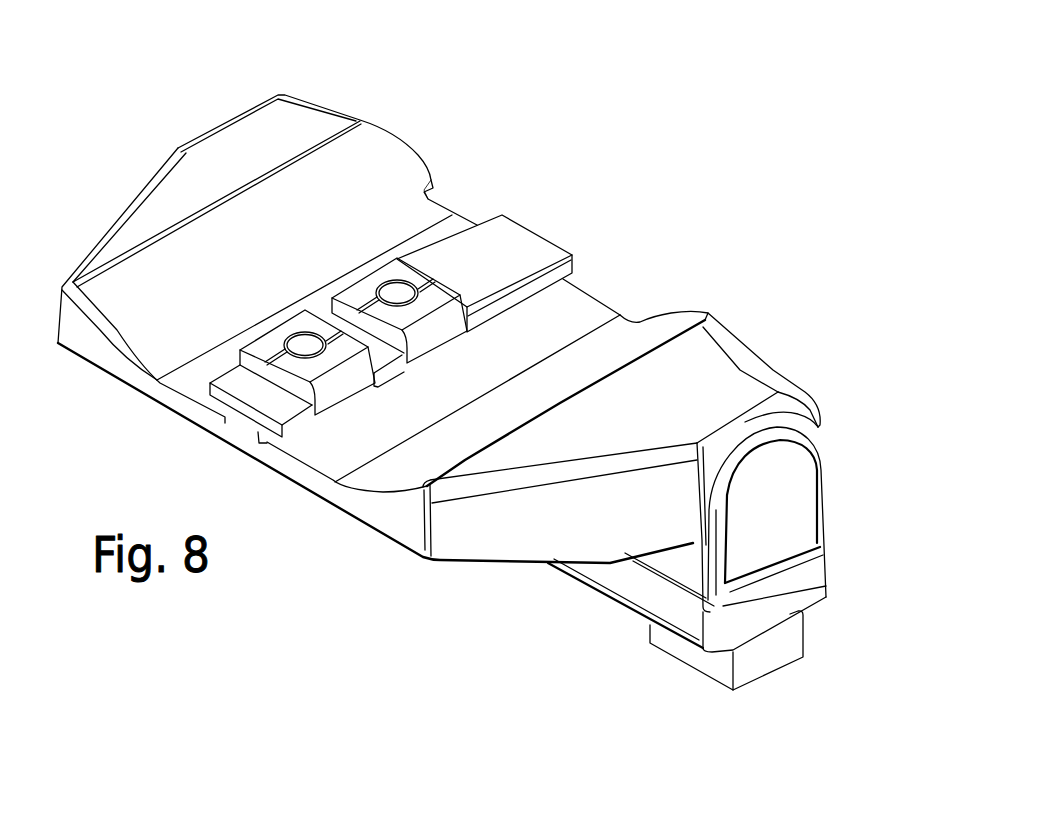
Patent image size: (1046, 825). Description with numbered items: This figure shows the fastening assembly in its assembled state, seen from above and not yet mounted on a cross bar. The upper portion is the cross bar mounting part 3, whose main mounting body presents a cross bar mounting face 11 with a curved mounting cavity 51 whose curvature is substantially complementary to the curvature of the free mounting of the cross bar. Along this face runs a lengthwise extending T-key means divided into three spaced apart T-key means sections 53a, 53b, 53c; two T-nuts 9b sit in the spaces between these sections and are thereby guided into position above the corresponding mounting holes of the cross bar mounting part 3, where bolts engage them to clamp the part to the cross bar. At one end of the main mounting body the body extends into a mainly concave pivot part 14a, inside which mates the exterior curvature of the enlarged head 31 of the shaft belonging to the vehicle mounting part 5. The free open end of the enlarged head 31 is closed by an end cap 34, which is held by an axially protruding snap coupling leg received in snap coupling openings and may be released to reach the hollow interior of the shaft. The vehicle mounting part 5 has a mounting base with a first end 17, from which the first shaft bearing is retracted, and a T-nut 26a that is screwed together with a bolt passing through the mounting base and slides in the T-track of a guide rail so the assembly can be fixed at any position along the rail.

The cross bar mounting part 3 is at (220, 147).
The vehicle mounting part 5 is at (618, 583).
The T-nuts 9b is at (363, 293).
The cross bar mounting face 11 is at (638, 328).
The pivot part 14a is at (813, 416).
The first end of the mounting base 17 is at (803, 578).
The T-nut 26a is at (780, 640).
The enlarged head 31 is at (688, 566).
The end cap 34 is at (793, 488).
The curved mounting cavity 51 is at (567, 325).
The T-key means section 53a is at (505, 240).
The T-key means section 53b is at (373, 355).
The T-key means section 53c is at (283, 407).